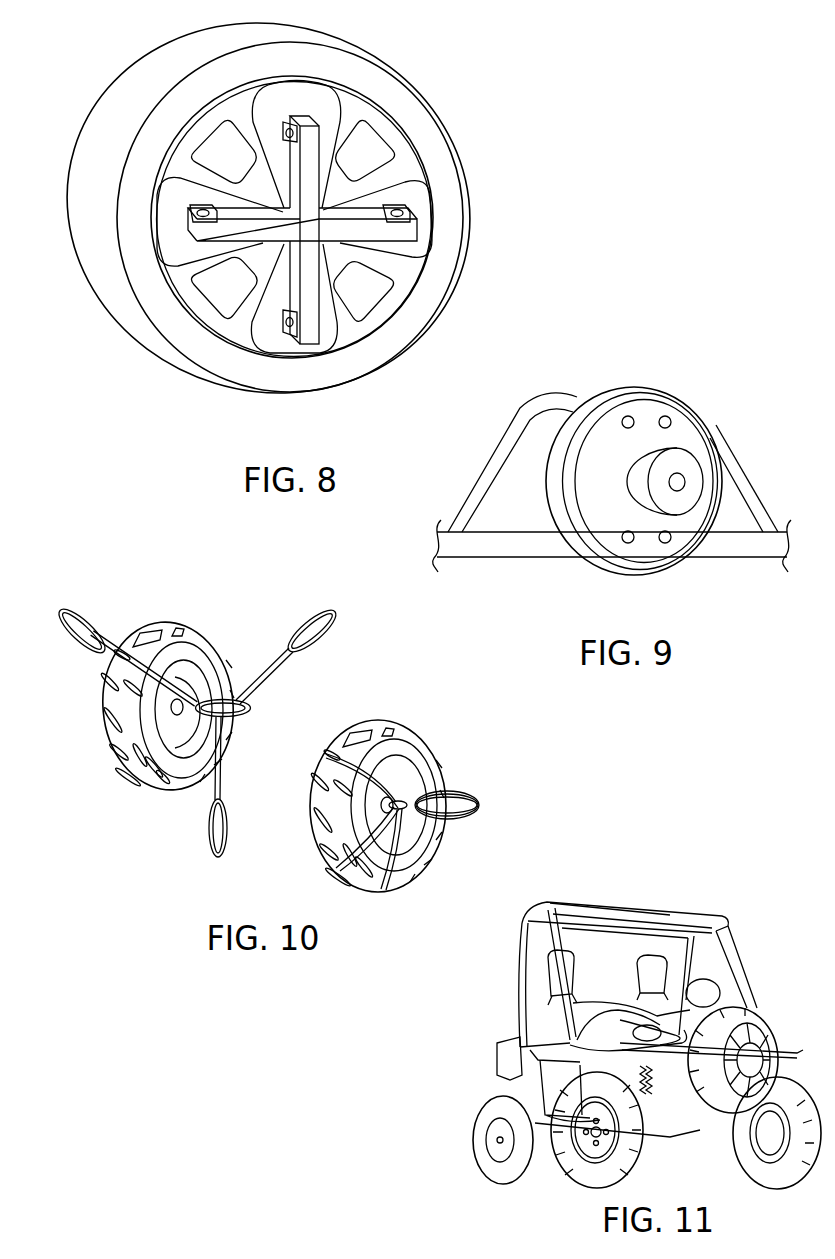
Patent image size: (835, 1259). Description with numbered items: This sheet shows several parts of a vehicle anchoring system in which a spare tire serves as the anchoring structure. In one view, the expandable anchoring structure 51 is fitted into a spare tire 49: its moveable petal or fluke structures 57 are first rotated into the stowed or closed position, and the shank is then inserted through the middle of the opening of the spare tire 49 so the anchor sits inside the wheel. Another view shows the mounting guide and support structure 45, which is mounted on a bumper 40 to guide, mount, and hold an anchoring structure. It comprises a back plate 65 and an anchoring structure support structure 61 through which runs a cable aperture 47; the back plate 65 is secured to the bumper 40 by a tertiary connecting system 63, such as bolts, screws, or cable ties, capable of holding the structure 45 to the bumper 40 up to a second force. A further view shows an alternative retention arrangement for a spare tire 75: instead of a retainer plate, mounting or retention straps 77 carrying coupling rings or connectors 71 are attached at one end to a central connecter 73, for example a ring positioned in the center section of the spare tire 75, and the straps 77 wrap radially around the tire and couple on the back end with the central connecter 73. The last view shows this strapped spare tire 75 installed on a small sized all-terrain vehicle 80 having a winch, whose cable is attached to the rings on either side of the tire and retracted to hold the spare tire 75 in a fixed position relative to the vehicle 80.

In FIG. 9, the bumper 40 is at (542, 543).
In FIG. 9, the mounting guide and support structure 45 is at (577, 390).
In FIG. 9, the cable aperture 47 is at (686, 482).
In FIG. 8, the spare tire 49 is at (105, 152).
In FIG. 8, the expandable anchoring structure 51 is at (310, 230).
In FIG. 8, the moveable petal or fluke structures 57 is at (315, 98).
In FIG. 9, the anchoring structure support structure 61 is at (677, 458).
In FIG. 9, the tertiary connecting system 63 is at (631, 415).
In FIG. 9, the back plate 65 is at (685, 425).
In FIG. 10, the coupling rings or connectors 71 is at (85, 617).
In FIG. 10, the central connecter 73 is at (247, 711).
In FIG. 10, the spare tire 75 is at (118, 727).
In FIG. 11, the spare tire 75 is at (757, 1022).
In FIG. 10, the mounting or retention straps 77 is at (105, 686).
In FIG. 11, the all-terrain vehicle 80 is at (505, 1008).